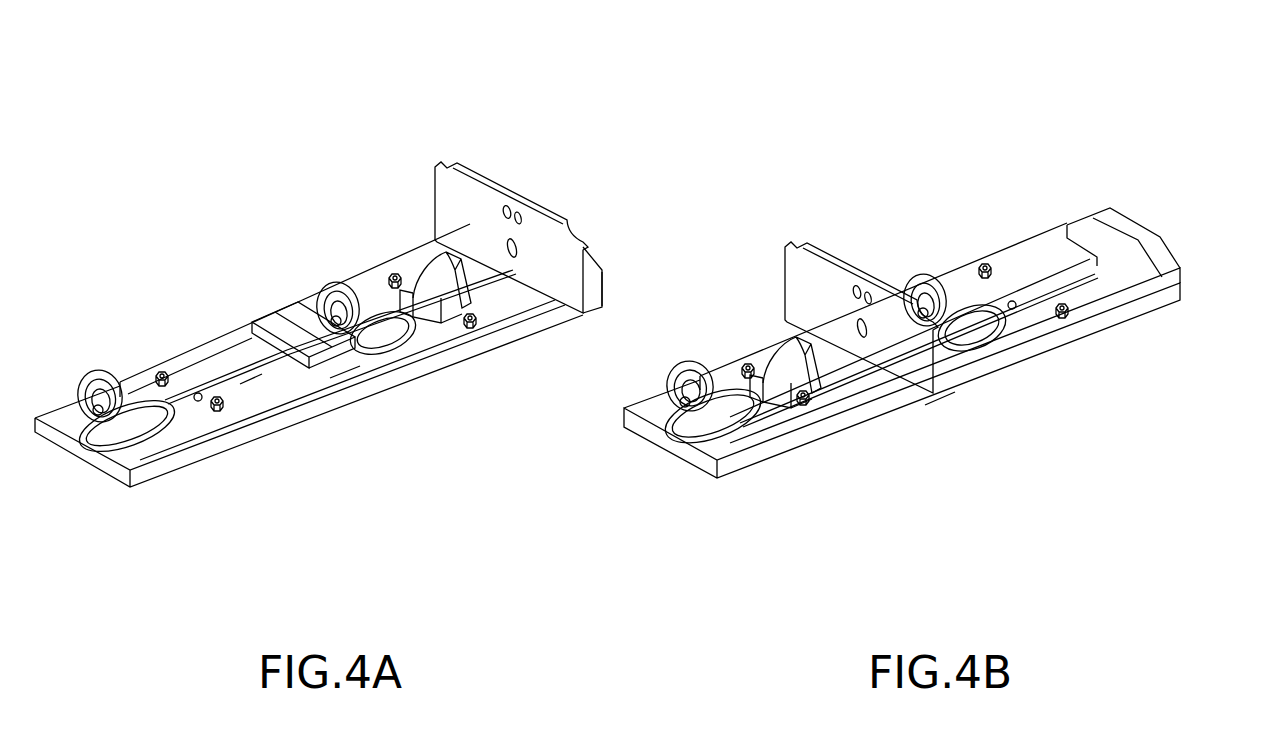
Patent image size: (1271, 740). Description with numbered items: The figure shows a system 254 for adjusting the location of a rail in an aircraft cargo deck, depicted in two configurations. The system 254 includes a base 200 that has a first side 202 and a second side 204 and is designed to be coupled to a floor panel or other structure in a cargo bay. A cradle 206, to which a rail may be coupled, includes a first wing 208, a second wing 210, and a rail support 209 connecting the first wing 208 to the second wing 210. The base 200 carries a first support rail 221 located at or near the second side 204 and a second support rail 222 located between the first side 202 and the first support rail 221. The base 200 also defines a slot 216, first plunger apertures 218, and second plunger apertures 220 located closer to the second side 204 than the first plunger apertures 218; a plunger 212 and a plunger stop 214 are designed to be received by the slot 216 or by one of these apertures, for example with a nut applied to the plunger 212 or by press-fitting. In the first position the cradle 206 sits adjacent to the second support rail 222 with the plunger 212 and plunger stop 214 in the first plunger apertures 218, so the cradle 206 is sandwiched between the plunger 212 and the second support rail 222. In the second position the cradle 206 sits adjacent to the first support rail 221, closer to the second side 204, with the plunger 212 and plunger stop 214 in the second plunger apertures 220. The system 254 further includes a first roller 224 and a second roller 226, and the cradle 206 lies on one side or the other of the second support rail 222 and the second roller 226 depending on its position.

In FIG. 4A, the base 200 is at (214, 343).
In FIG. 4B, the base 200 is at (1028, 268).
In FIG. 4A, the first side 202 is at (107, 463).
In FIG. 4B, the first side 202 is at (668, 445).
In FIG. 4A, the second side 204 is at (604, 280).
In FIG. 4B, the second side 204 is at (1185, 263).
In FIG. 4A, the cradle 206 is at (450, 157).
In FIG. 4B, the cradle 206 is at (834, 238).
In FIG. 4A, the first wing 208 is at (505, 290).
In FIG. 4B, the first wing 208 is at (838, 378).
In FIG. 4A, the rail support 209 is at (513, 293).
In FIG. 4B, the rail support 209 is at (872, 375).
In FIG. 4A, the second wing 210 is at (516, 180).
In FIG. 4B, the second wing 210 is at (870, 268).
In FIG. 4A, the plunger 212 is at (450, 320).
In FIG. 4B, the plunger 212 is at (806, 402).
In FIG. 4A, the plunger stop 214 is at (413, 292).
In FIG. 4B, the plunger stop 214 is at (762, 350).
In FIG. 4A, the slot 216 is at (257, 378).
In FIG. 4A, the first plunger apertures 218 is at (203, 400).
In FIG. 4B, the second plunger apertures 220 is at (1013, 315).
In FIG. 4A, the first support rail 221 is at (594, 258).
In FIG. 4A, the second support rail 222 is at (347, 355).
In FIG. 4B, the second support rail 222 is at (940, 395).
In FIG. 4A, the first roller 224 is at (99, 384).
In FIG. 4B, the first roller 224 is at (712, 405).
In FIG. 4A, the second roller 226 is at (335, 292).
In FIG. 4B, the second roller 226 is at (955, 314).
In FIG. 4A, the system 254 is at (233, 163).
In FIG. 4B, the system 254 is at (797, 97).